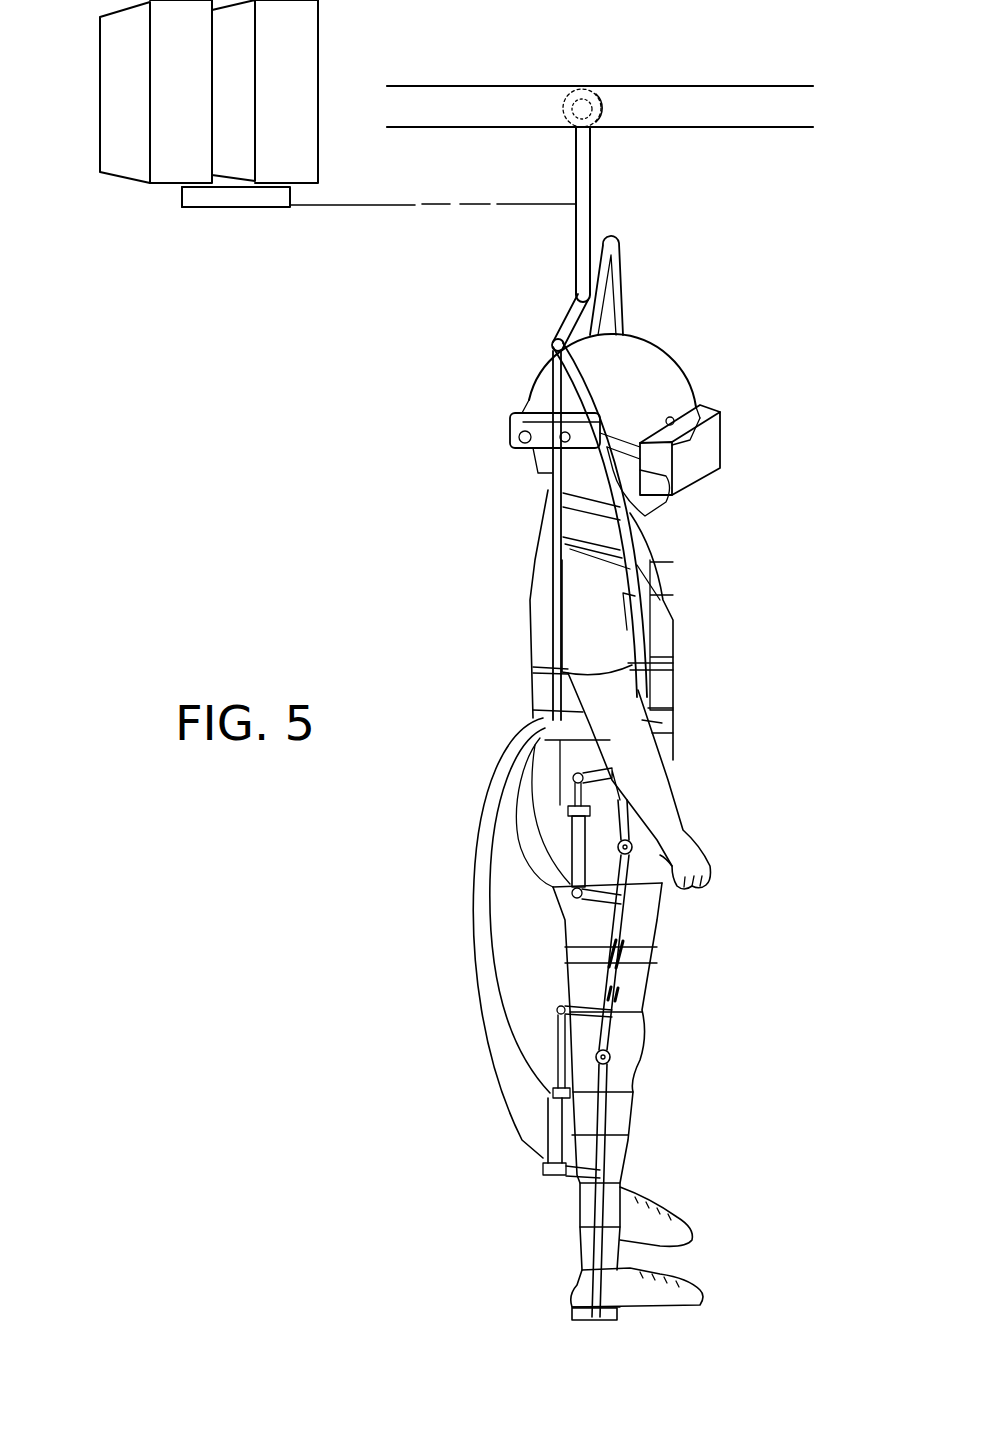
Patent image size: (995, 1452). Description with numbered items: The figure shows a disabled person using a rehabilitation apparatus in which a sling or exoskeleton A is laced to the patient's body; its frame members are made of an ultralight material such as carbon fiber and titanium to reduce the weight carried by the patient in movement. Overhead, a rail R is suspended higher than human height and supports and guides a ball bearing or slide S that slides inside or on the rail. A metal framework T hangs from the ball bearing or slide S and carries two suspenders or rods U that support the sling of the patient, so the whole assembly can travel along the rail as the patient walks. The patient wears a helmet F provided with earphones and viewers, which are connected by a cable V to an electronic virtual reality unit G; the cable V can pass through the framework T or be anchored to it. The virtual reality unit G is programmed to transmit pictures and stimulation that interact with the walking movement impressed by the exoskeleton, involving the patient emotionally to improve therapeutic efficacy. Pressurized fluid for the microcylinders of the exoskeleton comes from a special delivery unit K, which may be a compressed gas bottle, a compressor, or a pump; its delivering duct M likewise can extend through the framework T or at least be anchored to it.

The electronic virtual reality unit G is at (100, 95).
The delivery unit K is at (318, 70).
The delivering duct M is at (290, 196).
The cable V is at (180, 198).
The rail R is at (775, 83).
The ball bearing or slide S is at (570, 92).
The metal framework T is at (591, 210).
The suspenders or rods U is at (580, 393).
The helmet F is at (540, 363).
The sling (exoskeleton) A is at (558, 937).